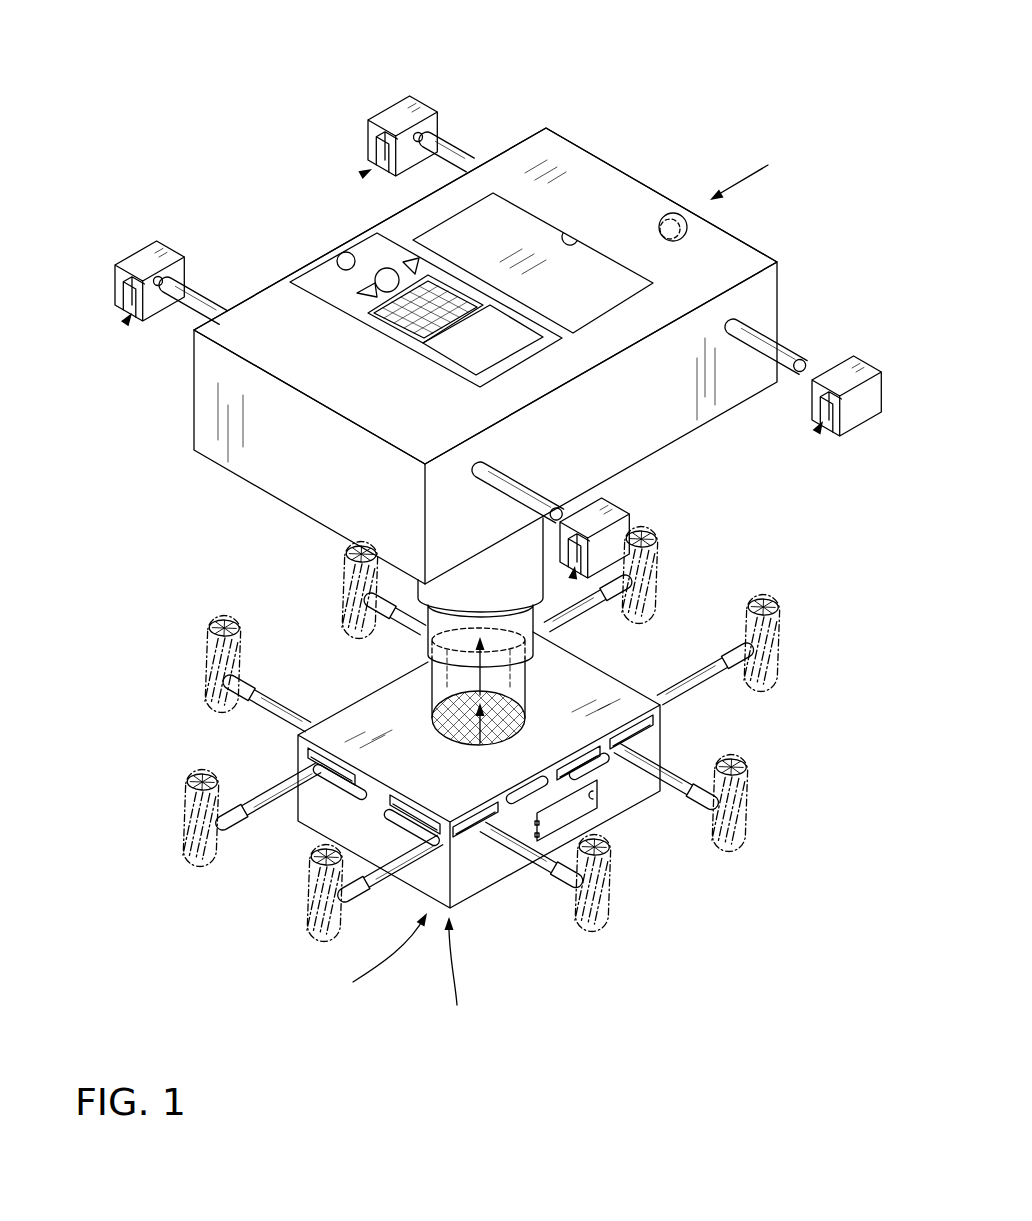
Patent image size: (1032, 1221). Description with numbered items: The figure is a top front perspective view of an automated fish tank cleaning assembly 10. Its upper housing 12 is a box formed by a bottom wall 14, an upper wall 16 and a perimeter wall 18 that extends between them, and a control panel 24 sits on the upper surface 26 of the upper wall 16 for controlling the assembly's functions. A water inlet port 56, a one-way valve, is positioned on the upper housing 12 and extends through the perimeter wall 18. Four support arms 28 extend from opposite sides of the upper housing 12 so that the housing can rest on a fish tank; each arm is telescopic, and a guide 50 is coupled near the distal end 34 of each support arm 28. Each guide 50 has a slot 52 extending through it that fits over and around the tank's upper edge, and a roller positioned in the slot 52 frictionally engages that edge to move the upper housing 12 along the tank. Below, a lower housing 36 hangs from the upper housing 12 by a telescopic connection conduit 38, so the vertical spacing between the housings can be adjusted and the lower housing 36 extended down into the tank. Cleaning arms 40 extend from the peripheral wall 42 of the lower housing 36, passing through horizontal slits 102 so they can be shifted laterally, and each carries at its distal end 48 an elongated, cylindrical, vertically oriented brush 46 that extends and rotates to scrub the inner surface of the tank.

The automated fish tank cleaning assembly 10 is at (661, 88).
The upper housing 12 is at (764, 240).
The bottom wall 14 is at (262, 500).
The upper wall 16 is at (598, 185).
The perimeter wall 18 is at (200, 395).
The control panel 24 is at (388, 252).
The upper surface 26 is at (374, 376).
The support arms 28 is at (458, 160).
The distal end 34 is at (425, 140).
The lower housing 36 is at (643, 685).
The connection conduit 38 is at (445, 617).
The cleaning arms 40 is at (420, 622).
The peripheral wall 42 is at (467, 890).
The brushes 46 is at (340, 560).
The distal end 48 is at (365, 600).
The guides 50 is at (414, 100).
The slot 52 is at (370, 170).
The water inlet port 56 is at (690, 204).
The horizontal slit 102 is at (500, 815).